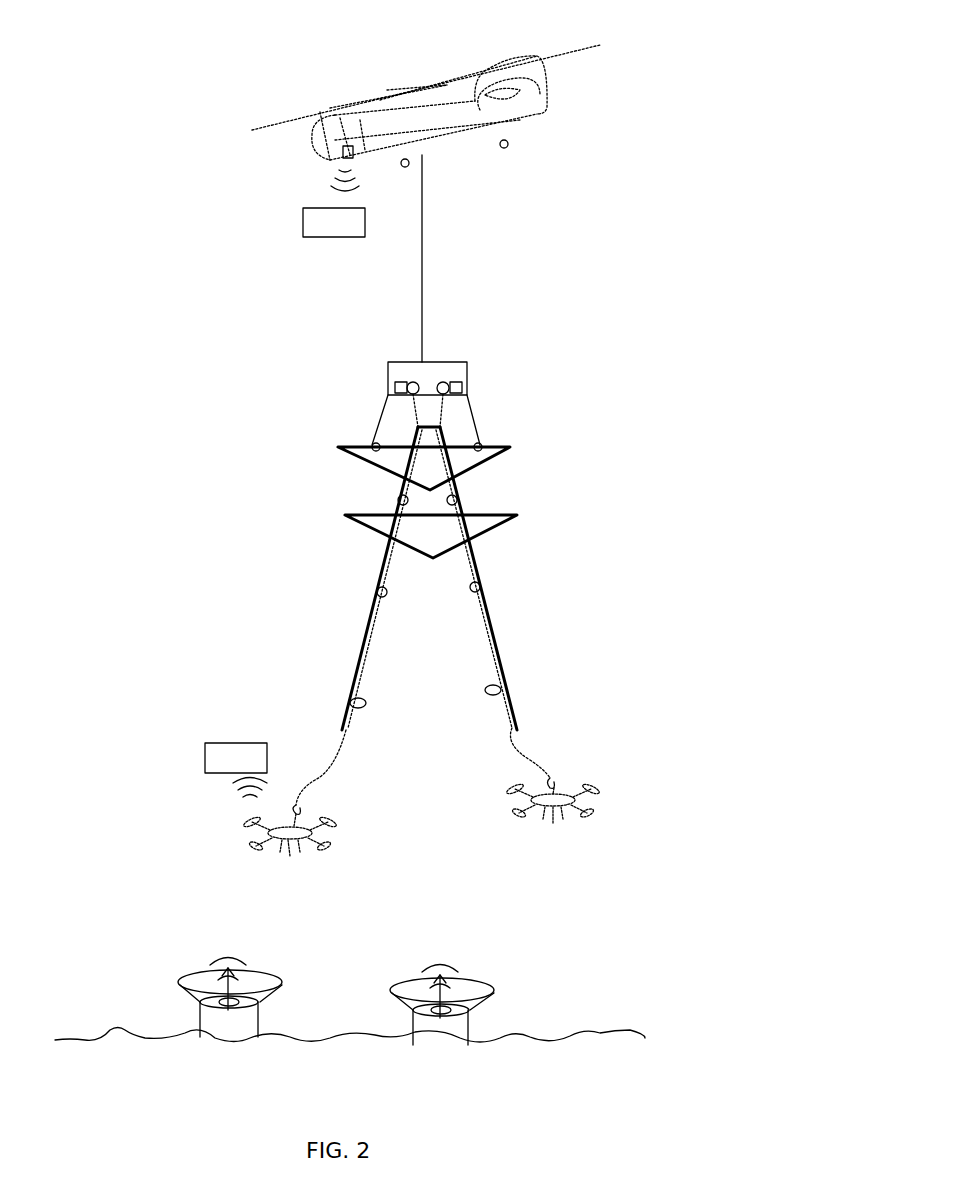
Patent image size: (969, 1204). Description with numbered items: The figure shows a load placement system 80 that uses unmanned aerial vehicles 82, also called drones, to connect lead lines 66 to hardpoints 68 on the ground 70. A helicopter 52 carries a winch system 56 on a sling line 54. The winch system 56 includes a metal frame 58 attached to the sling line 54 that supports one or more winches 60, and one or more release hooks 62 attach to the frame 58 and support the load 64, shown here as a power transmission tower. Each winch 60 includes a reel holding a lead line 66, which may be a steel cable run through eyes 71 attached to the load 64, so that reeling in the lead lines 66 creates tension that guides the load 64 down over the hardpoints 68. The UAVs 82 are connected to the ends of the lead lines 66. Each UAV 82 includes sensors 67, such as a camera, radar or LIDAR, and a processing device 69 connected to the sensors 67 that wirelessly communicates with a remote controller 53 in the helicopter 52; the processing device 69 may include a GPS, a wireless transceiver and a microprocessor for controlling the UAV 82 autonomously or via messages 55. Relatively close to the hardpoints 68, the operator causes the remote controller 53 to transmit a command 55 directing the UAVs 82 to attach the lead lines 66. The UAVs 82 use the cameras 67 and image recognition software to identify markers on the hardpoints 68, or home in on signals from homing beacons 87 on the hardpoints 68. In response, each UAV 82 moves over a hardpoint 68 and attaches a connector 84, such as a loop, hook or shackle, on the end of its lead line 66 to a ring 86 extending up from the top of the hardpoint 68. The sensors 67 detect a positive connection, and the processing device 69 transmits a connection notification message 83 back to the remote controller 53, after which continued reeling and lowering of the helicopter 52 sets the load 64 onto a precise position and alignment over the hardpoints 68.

The helicopter 52 is at (533, 110).
The remote controller 53 is at (340, 160).
The sling line 54 is at (422, 278).
The command 55 is at (334, 222).
The winch system 56 is at (520, 308).
The metal frame 58 is at (465, 362).
The winch 60 is at (395, 387).
The release hook 62 is at (375, 415).
The load 64 is at (360, 523).
The lead line 66 is at (343, 760).
The sensor 67 is at (290, 850).
The hardpoint 68 is at (200, 1020).
The processing device 69 is at (285, 846).
The ground 70 is at (617, 1028).
The eye 71 is at (488, 690).
The load placement system 80 is at (186, 541).
The unmanned aerial vehicle 82 is at (258, 828).
The connection notification message 83 is at (236, 770).
The connector 84 is at (300, 808).
The ring 86 is at (262, 975).
The homing beacon 87 is at (228, 1005).